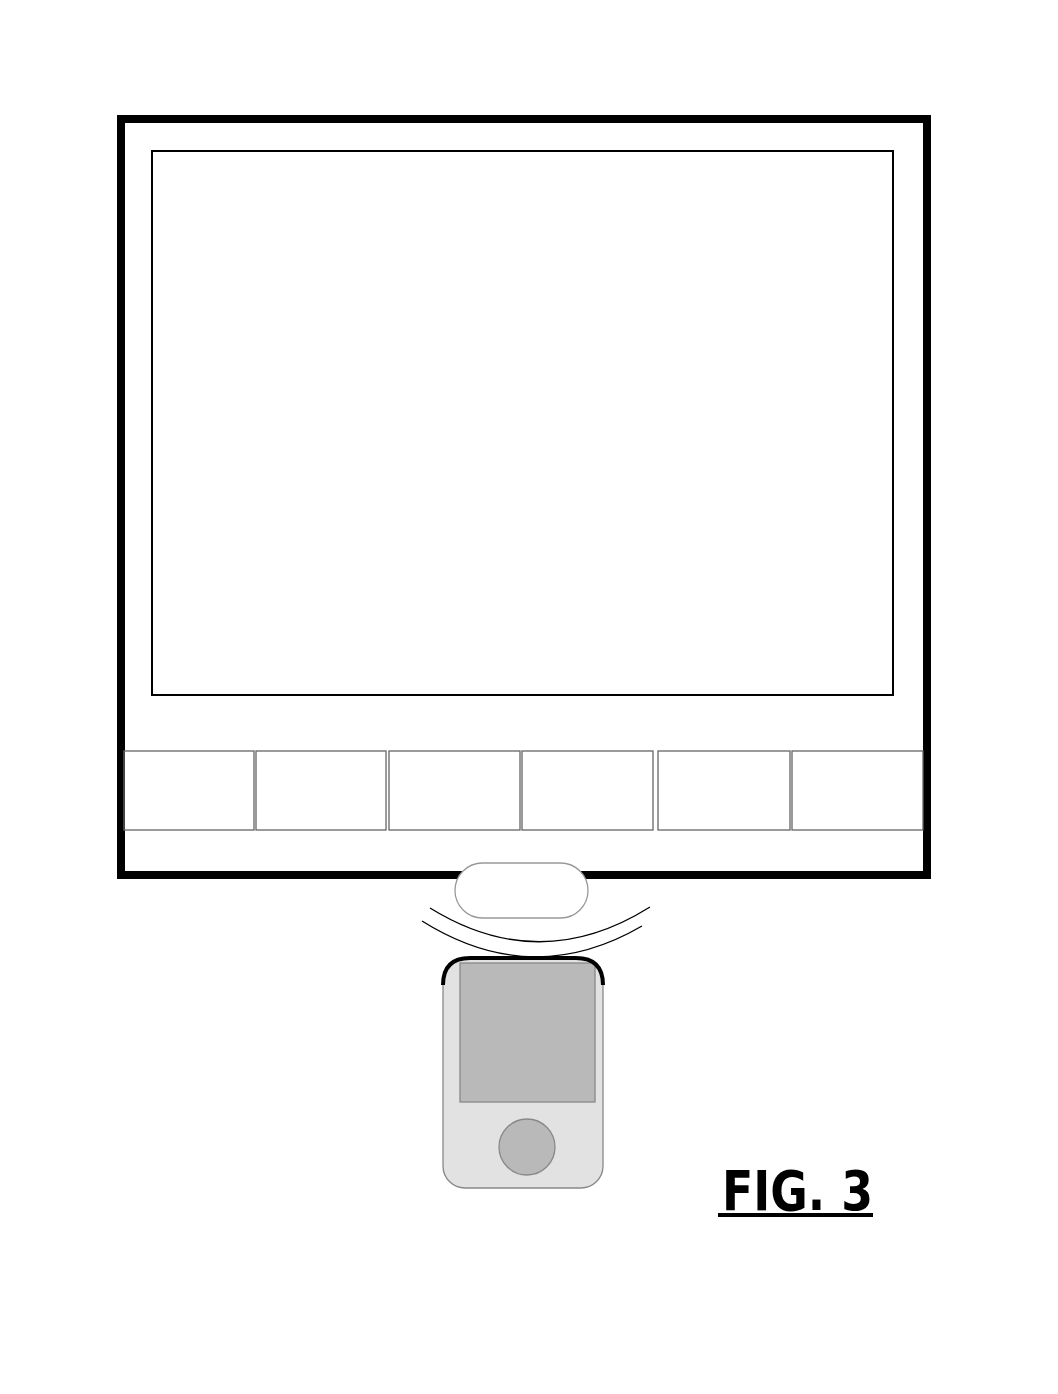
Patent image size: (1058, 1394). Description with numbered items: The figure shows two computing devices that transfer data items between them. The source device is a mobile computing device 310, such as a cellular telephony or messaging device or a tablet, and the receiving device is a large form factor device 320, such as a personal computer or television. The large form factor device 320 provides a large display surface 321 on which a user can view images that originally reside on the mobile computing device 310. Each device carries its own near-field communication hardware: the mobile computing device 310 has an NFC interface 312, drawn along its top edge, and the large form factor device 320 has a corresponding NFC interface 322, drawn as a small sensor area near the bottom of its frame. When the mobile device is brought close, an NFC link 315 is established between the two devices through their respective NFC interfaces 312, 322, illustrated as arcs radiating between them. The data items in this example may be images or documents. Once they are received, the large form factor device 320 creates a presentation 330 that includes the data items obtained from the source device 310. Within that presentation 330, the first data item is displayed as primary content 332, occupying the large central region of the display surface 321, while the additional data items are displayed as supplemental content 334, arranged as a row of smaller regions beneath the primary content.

The mobile computing device 310 is at (615, 1015).
The NFC interface 312 is at (447, 960).
The NFC link 315 is at (420, 922).
The large form factor device 320 is at (792, 85).
The display surface 321 is at (138, 218).
The NFC interface 322 is at (587, 892).
The presentation 330 is at (246, 773).
The primary content 332 is at (853, 198).
The supplemental content 334 is at (886, 786).